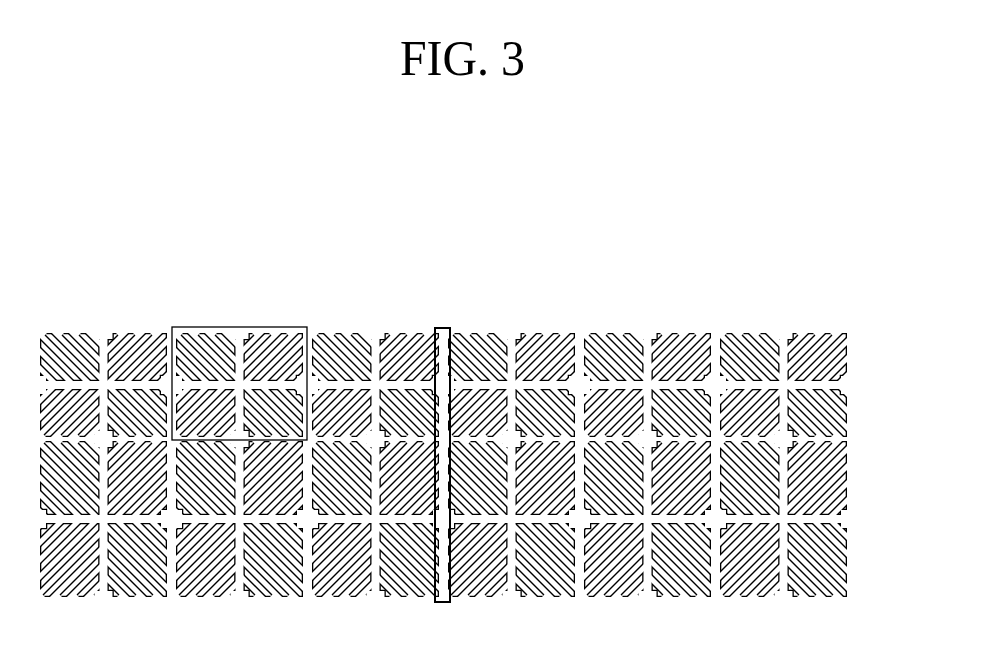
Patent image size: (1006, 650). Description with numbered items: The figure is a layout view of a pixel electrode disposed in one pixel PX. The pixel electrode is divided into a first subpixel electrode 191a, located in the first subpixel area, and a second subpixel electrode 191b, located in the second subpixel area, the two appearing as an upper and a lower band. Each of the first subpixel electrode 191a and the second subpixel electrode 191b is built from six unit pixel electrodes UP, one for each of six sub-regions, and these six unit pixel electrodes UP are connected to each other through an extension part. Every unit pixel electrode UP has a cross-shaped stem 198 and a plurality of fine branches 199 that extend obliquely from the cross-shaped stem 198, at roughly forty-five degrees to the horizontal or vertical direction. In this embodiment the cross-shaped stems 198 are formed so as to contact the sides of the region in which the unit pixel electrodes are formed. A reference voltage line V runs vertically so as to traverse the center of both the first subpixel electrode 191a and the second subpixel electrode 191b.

The first subpixel electrode 191a is at (482, 354).
The second subpixel electrode 191b is at (878, 520).
The cross-shaped stem 198 is at (510, 350).
The fine branches 199 is at (340, 333).
The reference voltage line V is at (443, 328).
The unit pixel electrode UP is at (195, 327).
The pixel PX is at (500, 414).